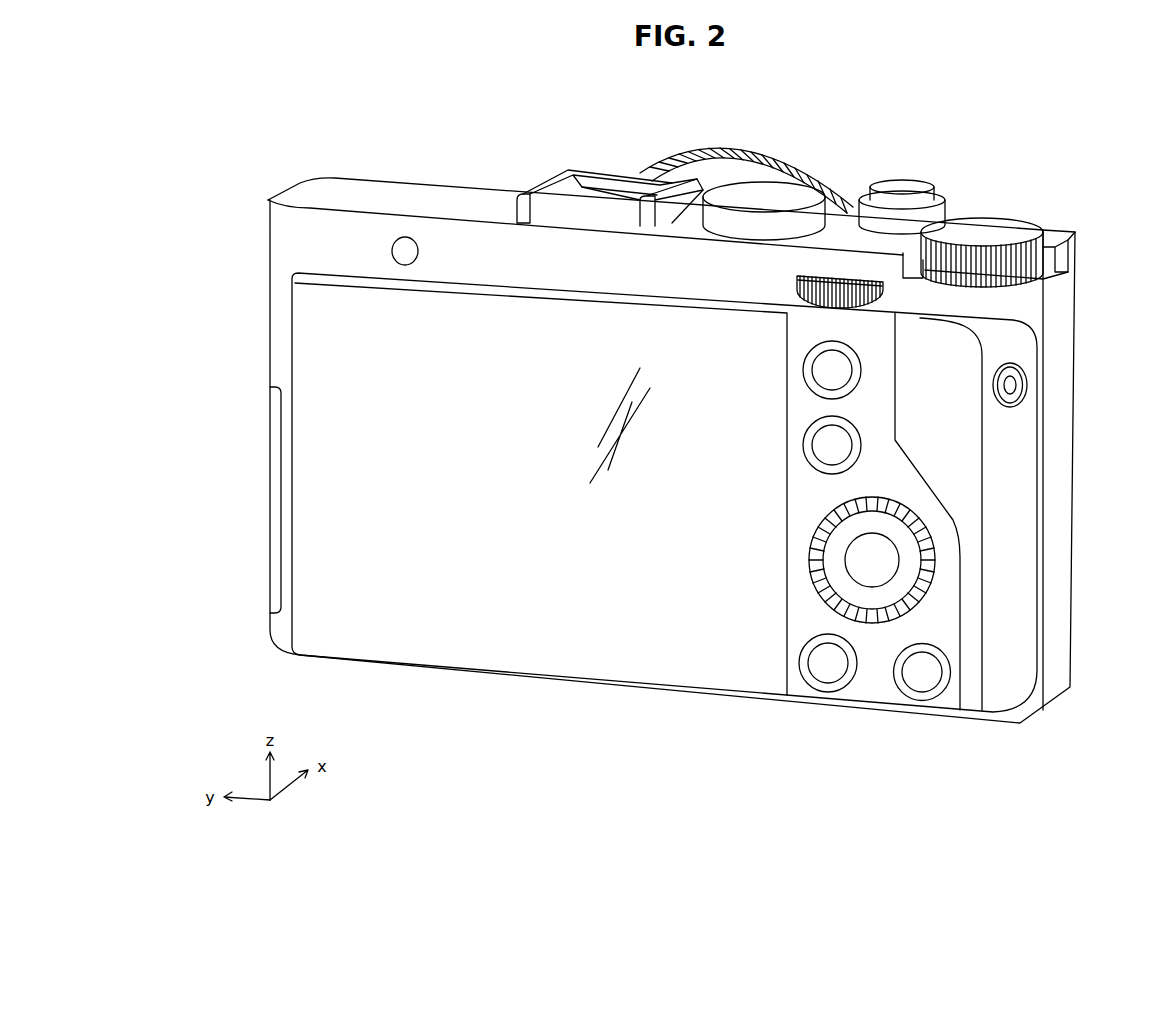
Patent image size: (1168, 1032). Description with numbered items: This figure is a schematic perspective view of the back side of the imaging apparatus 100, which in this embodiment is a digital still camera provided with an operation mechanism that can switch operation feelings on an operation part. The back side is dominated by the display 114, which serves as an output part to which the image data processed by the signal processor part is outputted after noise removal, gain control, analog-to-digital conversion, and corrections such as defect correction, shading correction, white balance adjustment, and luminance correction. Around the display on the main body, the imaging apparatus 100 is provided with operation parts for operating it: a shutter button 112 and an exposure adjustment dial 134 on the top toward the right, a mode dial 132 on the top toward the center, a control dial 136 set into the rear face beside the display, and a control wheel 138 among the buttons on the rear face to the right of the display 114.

The imaging apparatus 100 is at (1013, 112).
The shutter button 112 is at (902, 187).
The display 114 is at (332, 417).
The mode dial 132 is at (767, 186).
The exposure adjustment dial 134 is at (1000, 233).
The control dial 136 is at (840, 285).
The control wheel 138 is at (930, 562).